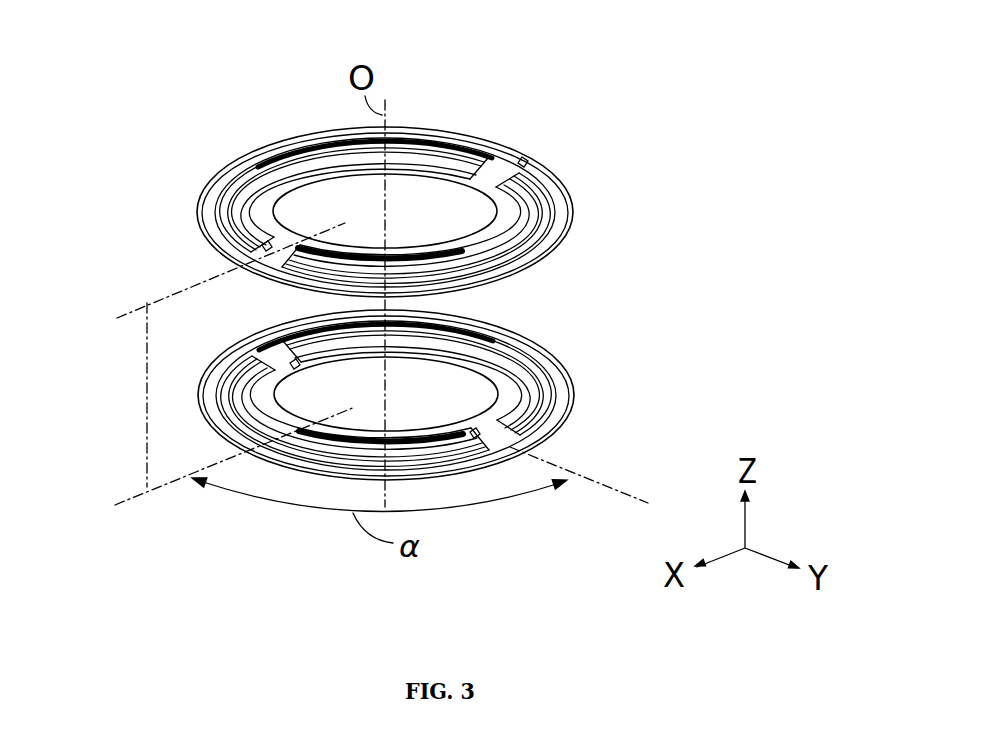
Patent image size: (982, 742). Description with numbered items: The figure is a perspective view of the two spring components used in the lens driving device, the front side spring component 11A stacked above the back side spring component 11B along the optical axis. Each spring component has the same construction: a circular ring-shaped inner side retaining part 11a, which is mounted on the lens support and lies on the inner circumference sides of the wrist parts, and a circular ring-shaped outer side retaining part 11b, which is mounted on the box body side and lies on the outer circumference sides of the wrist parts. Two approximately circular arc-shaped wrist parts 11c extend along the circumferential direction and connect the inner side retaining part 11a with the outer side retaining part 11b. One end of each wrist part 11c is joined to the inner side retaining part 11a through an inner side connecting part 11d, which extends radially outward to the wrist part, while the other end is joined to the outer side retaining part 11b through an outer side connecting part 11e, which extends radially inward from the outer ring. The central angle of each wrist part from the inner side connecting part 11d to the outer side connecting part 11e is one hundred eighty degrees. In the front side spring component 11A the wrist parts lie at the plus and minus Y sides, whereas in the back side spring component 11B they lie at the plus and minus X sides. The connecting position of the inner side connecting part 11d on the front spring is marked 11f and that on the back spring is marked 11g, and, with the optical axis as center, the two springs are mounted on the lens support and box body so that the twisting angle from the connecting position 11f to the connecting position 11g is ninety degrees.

The front side spring component 11A is at (257, 148).
The back side spring component 11B is at (560, 377).
The inner side retaining part 11a is at (552, 198).
The outer side retaining part 11b is at (317, 130).
The wrist part 11c is at (227, 225).
The inner side connecting part 11d is at (522, 157).
The outer side connecting part 11e is at (488, 150).
The connecting position 11f is at (117, 318).
The connecting position 11g is at (607, 490).